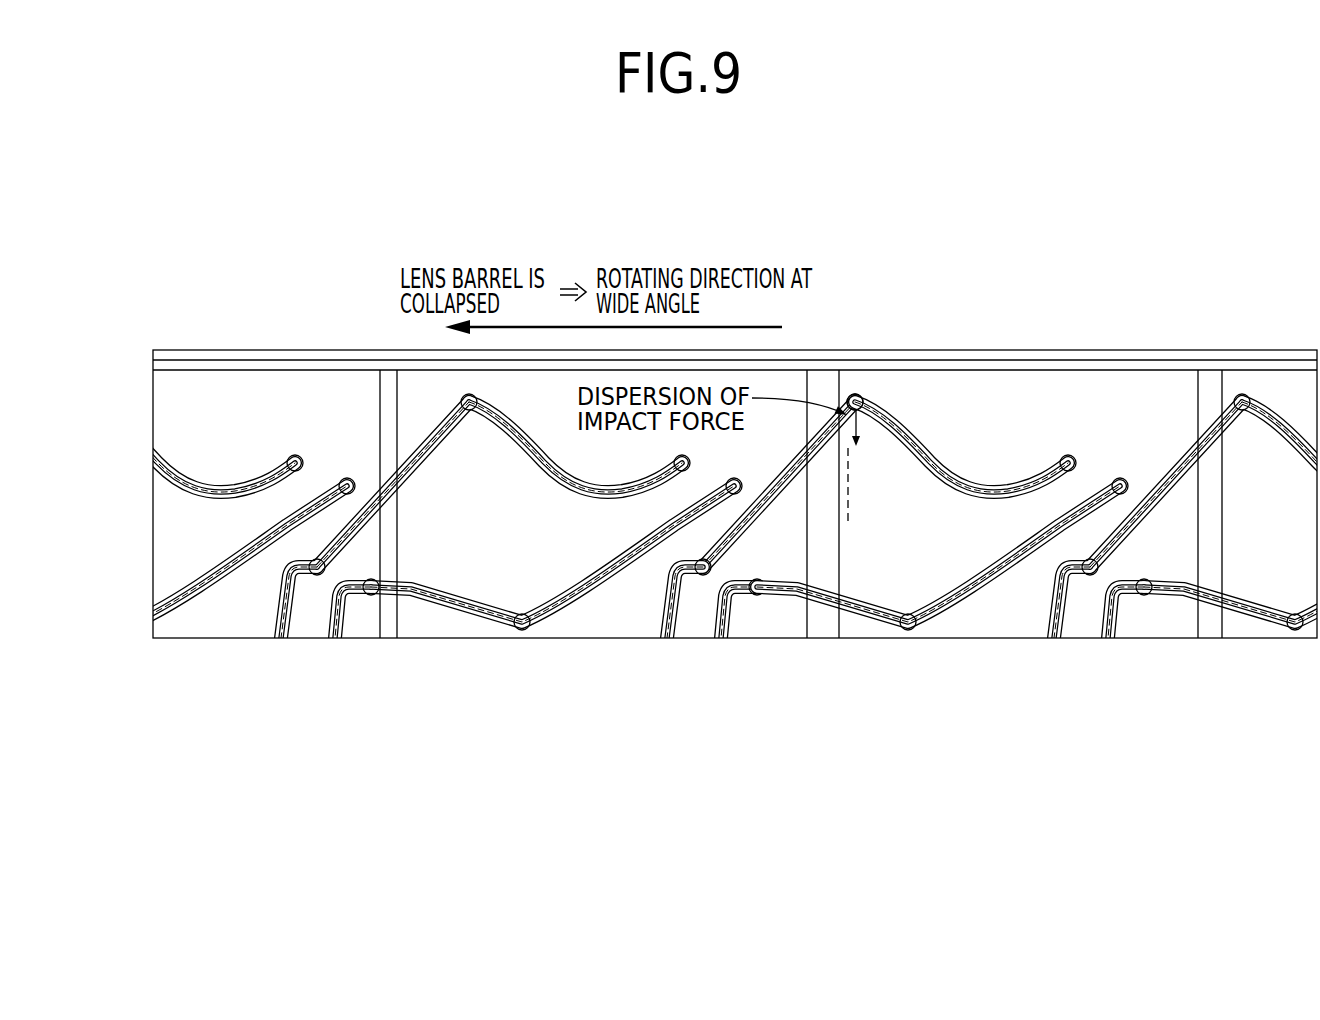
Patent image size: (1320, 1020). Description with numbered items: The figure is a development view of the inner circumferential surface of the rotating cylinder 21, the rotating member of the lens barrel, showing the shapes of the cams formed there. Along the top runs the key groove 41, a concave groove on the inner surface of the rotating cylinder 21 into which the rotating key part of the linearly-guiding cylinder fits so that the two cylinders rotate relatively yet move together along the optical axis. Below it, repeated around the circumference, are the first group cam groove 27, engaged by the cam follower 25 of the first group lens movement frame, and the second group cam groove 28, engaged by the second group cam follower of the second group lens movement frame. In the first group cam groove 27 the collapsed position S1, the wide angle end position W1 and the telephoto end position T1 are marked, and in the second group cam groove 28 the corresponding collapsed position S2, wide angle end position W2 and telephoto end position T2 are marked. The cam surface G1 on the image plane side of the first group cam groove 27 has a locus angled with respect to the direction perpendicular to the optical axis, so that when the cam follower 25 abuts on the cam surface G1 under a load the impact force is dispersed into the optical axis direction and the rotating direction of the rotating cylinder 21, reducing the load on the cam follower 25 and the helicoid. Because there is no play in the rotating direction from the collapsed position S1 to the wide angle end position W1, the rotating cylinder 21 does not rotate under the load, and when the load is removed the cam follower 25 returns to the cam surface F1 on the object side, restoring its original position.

The rotating cylinder 21 is at (318, 350).
The key groove 41 is at (153, 360).
The cam follower 25 is at (868, 392).
The first group cam groove 27 is at (967, 480).
The second group cam groove 28 is at (980, 606).
The cam surface on the object side F1 is at (853, 392).
The telephoto end position T1 is at (1058, 455).
The telephoto end position T2 is at (1118, 495).
The collapsed position S1 is at (698, 577).
The collapsed position S2 is at (752, 602).
The wide angle end position W1 is at (866, 498).
The wide angle end position W2 is at (905, 632).
The cam surface on the image plane side G1 is at (872, 422).